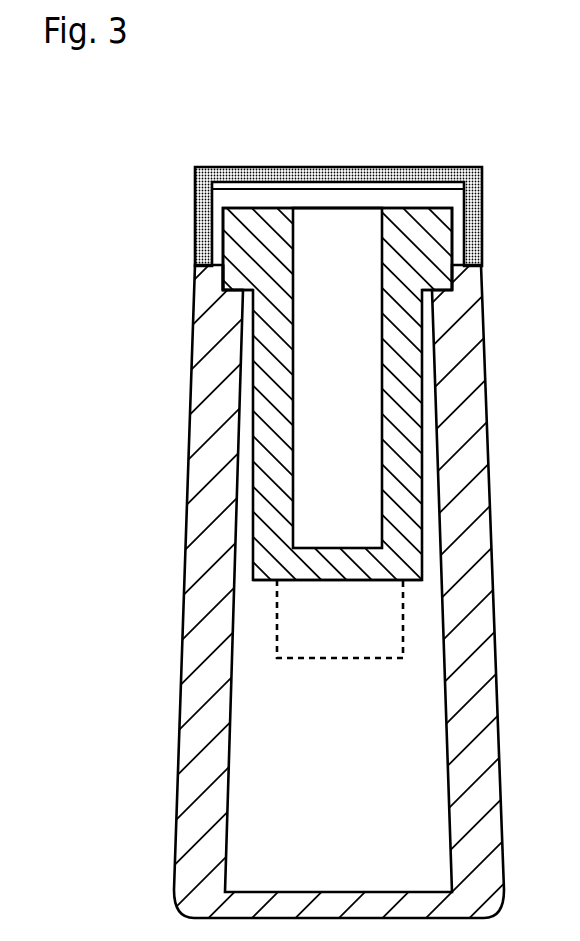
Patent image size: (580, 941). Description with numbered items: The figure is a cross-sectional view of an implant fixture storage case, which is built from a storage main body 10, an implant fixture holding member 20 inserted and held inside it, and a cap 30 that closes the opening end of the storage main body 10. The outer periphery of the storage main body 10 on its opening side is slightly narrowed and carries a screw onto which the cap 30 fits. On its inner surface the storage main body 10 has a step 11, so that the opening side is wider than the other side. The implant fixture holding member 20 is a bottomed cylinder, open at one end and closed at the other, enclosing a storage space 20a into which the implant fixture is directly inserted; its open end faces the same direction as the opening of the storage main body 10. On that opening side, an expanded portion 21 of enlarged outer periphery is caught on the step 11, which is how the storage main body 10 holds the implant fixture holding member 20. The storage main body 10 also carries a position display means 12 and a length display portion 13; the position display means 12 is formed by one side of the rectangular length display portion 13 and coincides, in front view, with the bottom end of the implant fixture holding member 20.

The storage main body 10 is at (127, 623).
The step 11 is at (219, 298).
The position display means 12 is at (373, 575).
The length display portion 13 is at (290, 632).
The implant fixture holding member 20 is at (263, 419).
The storage space 20a is at (347, 237).
The expanded portion 21 is at (243, 232).
The cap 30 is at (179, 154).